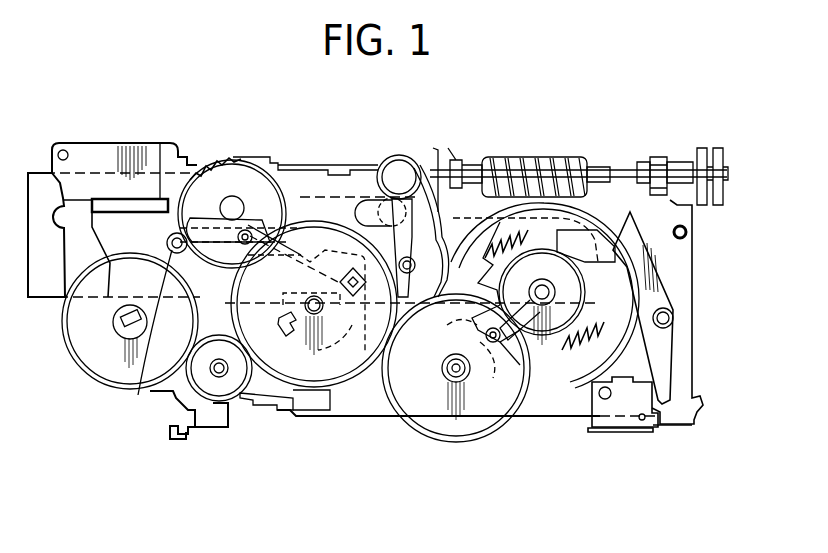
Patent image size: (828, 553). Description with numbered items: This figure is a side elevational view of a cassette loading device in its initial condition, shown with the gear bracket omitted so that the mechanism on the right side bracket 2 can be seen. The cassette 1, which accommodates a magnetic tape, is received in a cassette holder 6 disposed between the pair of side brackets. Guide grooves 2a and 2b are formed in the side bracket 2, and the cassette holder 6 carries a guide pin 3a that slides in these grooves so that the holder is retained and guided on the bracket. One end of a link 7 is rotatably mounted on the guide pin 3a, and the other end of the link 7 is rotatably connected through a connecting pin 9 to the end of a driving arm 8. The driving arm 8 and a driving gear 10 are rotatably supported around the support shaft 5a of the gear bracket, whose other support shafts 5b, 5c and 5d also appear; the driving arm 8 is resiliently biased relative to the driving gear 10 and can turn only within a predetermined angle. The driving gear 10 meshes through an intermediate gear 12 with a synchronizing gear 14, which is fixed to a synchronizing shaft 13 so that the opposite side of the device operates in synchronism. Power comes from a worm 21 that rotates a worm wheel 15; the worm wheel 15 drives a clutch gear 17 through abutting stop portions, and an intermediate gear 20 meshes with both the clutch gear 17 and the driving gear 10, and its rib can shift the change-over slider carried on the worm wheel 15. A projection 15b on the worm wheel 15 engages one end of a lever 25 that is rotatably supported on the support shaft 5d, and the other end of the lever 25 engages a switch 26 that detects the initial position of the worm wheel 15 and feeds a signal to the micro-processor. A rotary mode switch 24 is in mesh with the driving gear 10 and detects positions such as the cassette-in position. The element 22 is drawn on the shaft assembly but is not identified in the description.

The cassette 1 is at (47, 310).
The side bracket 2 is at (118, 143).
The guide groove 2a is at (326, 235).
The guide groove 2b is at (404, 156).
The guide pin 3a is at (143, 372).
The support shaft 5a is at (326, 312).
The support shaft 5b is at (463, 382).
The support shaft 5c is at (550, 308).
The support shaft 5d is at (674, 318).
The cassette holder 6 is at (166, 246).
The link 7 is at (201, 222).
The driving arm 8 is at (304, 265).
The connecting pin 9 is at (241, 225).
The driving gear 10 is at (290, 412).
The intermediate gear 12 is at (210, 405).
The synchronizing shaft 13 is at (120, 333).
The synchronizing gear 14 is at (112, 390).
The worm wheel 15 is at (480, 205).
The projection 15b is at (612, 205).
The clutch gear 17 is at (577, 342).
The intermediate gear 20 is at (432, 428).
The worm 21 is at (527, 158).
The gear 22 is at (631, 172).
The mode switch 24 is at (270, 157).
The lever 25 is at (663, 268).
The switch 26 is at (652, 413).